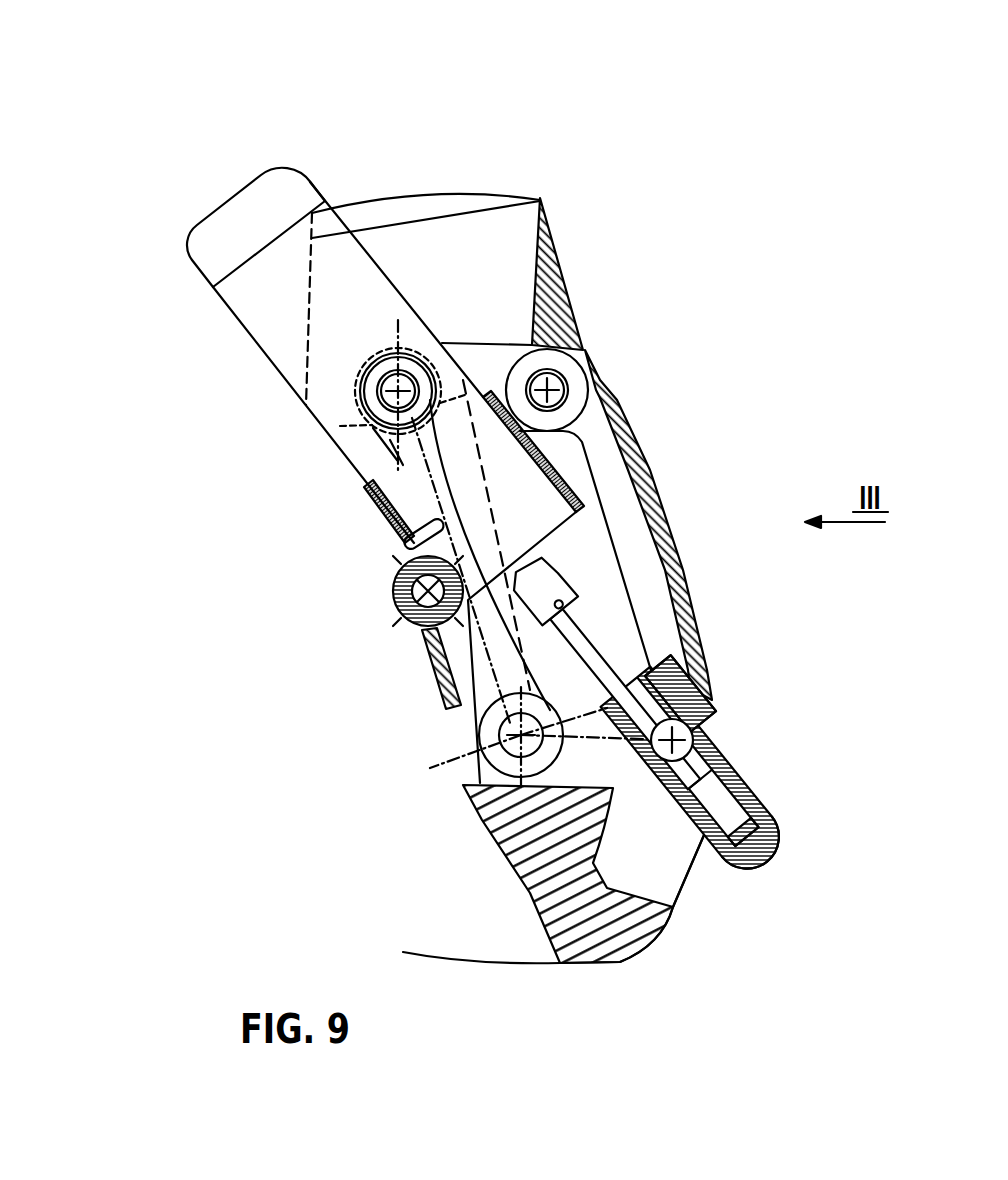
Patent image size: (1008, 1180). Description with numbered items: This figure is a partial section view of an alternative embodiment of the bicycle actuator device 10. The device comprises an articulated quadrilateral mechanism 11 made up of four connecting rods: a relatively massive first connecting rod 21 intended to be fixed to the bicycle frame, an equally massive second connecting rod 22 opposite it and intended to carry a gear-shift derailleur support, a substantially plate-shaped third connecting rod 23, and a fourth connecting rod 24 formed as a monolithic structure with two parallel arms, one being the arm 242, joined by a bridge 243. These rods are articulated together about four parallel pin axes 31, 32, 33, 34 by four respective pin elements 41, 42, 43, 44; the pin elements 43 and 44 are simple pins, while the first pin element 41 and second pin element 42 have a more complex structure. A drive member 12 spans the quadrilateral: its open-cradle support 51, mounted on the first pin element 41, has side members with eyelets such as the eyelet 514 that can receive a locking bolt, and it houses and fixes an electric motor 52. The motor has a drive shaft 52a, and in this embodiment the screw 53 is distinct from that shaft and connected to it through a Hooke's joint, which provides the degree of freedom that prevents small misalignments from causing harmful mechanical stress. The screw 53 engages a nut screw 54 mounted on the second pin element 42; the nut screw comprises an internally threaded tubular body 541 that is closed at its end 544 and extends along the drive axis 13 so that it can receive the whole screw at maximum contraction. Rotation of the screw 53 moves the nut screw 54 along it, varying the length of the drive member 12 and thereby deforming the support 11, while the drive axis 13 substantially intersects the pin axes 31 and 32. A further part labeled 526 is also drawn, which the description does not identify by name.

The actuator device 10 is at (431, 91).
The articulated quadrilateral mechanism 11 is at (602, 266).
The drive member 12 is at (162, 306).
The drive axis 13 is at (735, 775).
The first connecting rod 21 is at (527, 227).
The second connecting rod 22 is at (617, 932).
The third connecting rod 23 is at (640, 473).
The fourth connecting rod 24 is at (406, 660).
The pin axis 31 is at (398, 391).
The pin axis 32 is at (698, 731).
The pin axis 33 is at (547, 390).
The pin axis 34 is at (530, 781).
The first pin element 41 is at (310, 367).
The second pin element 42 is at (648, 812).
The pin element 43 is at (600, 338).
The pin element 44 is at (477, 700).
The open-cradle support 51 is at (351, 506).
The electric motor 52 is at (252, 192).
The drive shaft 52a is at (621, 586).
The screw 53 is at (603, 640).
The nut screw 54 is at (670, 638).
The arm 242 is at (440, 752).
The bridge 243 is at (430, 685).
The eyelet 514 is at (397, 588).
The connecting pin 526 is at (582, 575).
The tubular body 541 is at (765, 807).
The end 544 is at (772, 850).